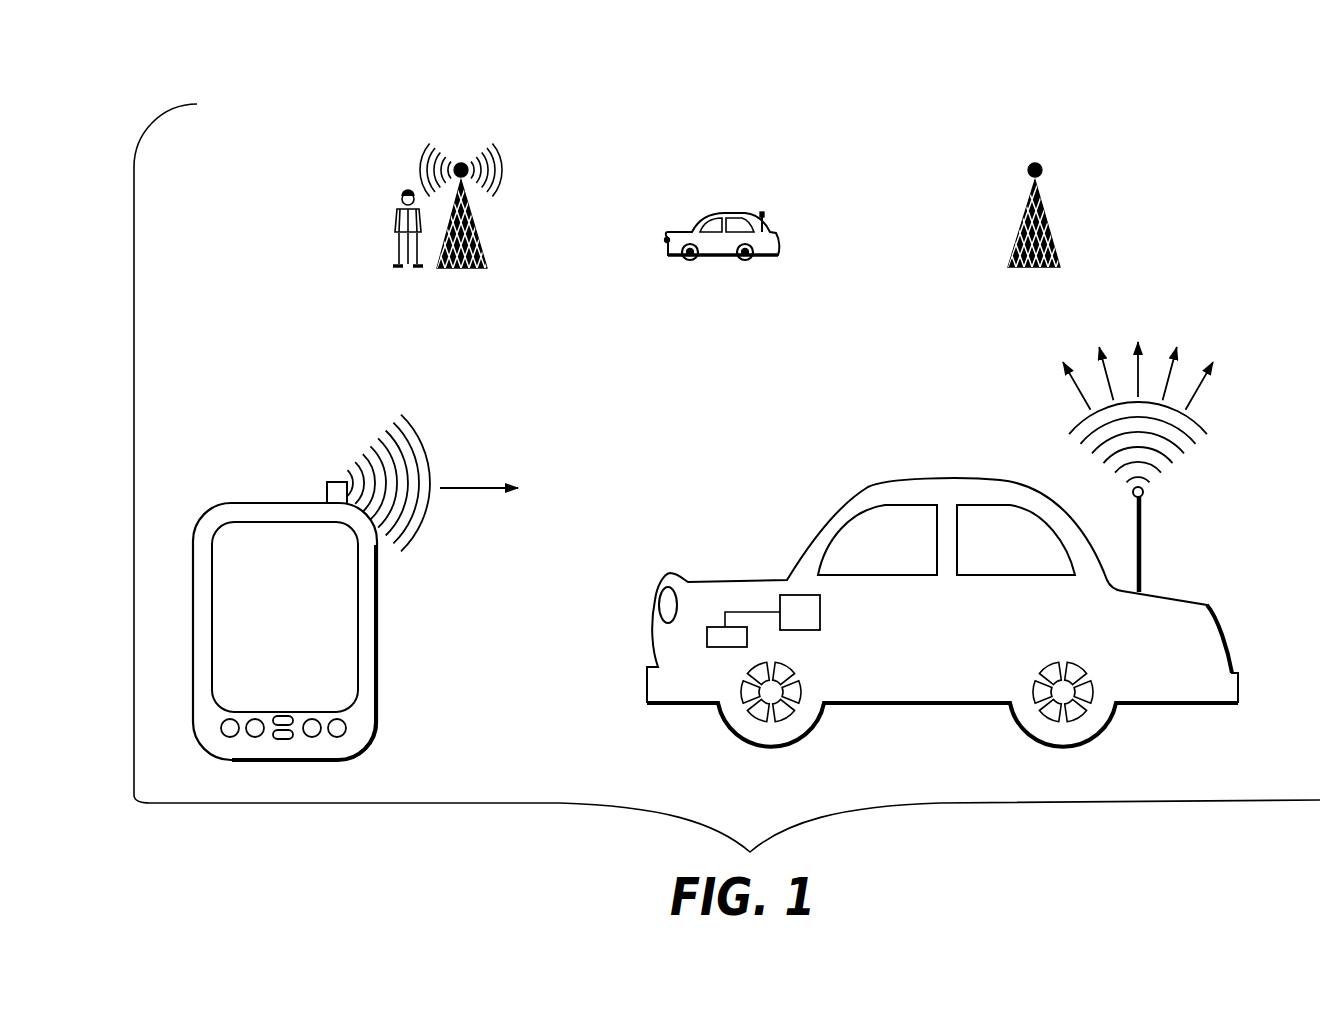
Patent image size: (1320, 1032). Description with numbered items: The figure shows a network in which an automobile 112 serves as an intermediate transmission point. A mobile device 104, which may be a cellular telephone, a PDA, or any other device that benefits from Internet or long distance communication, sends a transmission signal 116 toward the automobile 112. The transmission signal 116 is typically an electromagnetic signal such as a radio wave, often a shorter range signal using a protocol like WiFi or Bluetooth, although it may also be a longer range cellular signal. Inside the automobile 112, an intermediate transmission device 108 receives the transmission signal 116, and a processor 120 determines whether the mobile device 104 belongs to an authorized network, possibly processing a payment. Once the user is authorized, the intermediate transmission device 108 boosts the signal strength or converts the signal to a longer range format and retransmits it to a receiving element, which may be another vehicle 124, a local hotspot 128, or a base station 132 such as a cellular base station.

The mobile device 104 is at (248, 503).
The intermediate transmission device 108 is at (735, 612).
The automobile 112 is at (1212, 607).
The transmission signal 116 is at (420, 423).
The processor 120 is at (820, 608).
The another vehicle 124 is at (718, 203).
The local hotspot 128 is at (475, 137).
The base station 132 is at (1043, 157).